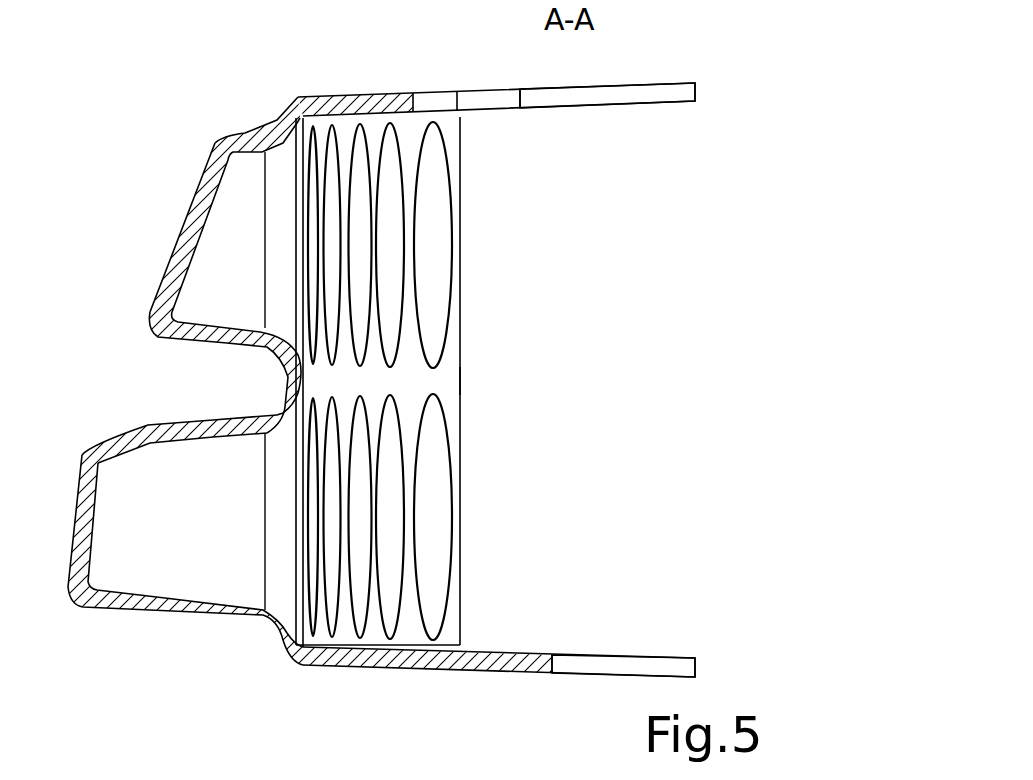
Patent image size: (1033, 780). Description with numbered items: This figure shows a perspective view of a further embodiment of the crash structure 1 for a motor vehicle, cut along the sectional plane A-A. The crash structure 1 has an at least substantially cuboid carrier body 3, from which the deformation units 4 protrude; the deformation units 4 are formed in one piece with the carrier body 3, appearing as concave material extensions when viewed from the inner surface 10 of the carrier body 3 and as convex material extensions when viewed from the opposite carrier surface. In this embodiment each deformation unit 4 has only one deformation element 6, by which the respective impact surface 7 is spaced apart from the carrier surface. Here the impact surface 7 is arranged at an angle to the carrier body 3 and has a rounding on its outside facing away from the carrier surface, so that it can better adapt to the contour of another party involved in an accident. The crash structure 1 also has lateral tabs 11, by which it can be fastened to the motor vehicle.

The crash structure 1 is at (644, 344).
The carrier body 3 is at (461, 290).
The deformation unit 4 is at (256, 131).
The deformation element 6 is at (227, 341).
The impact surface 7 is at (178, 236).
The inner surface 10 is at (447, 382).
The lateral tab 11 is at (633, 82).